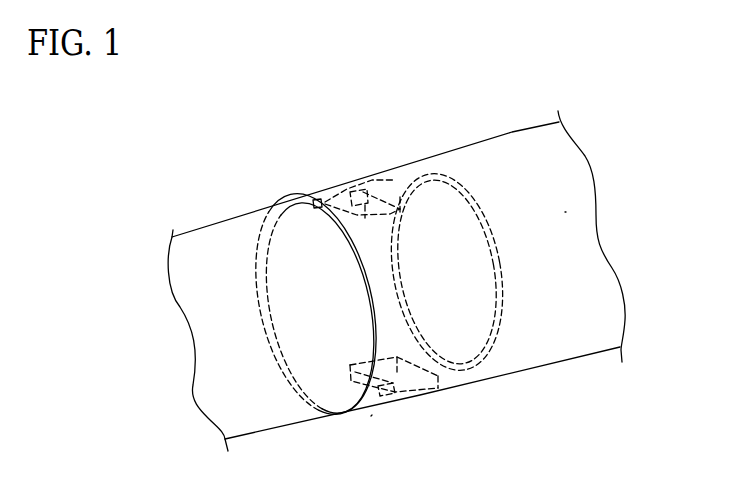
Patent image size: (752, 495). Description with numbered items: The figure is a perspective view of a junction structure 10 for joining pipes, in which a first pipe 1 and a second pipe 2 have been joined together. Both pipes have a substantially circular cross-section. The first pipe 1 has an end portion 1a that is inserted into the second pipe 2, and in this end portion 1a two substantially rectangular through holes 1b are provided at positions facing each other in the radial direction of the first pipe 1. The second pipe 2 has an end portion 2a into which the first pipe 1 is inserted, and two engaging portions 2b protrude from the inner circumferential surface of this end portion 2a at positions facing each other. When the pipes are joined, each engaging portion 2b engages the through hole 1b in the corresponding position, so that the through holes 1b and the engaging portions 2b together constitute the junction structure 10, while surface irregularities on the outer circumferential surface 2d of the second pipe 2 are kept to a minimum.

The first pipe 1 is at (216, 228).
The end portion 1a is at (452, 396).
The through holes 1b is at (376, 182).
The second pipe 2 is at (511, 134).
The end portion 2a is at (371, 416).
The engaging portions 2b is at (350, 190).
The outer circumferential surface 2d is at (565, 212).
The junction structure 10 is at (415, 160).